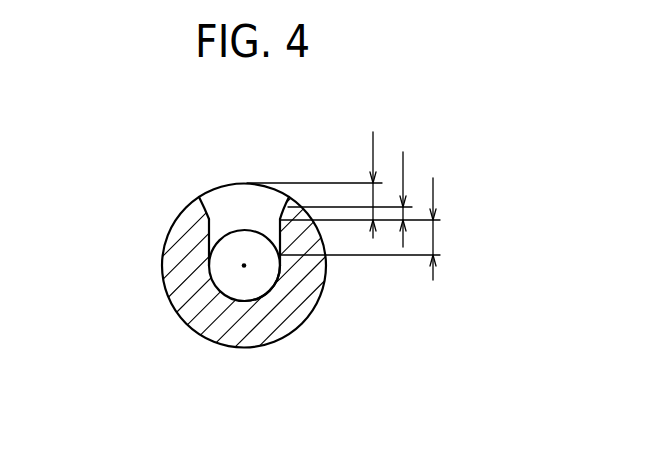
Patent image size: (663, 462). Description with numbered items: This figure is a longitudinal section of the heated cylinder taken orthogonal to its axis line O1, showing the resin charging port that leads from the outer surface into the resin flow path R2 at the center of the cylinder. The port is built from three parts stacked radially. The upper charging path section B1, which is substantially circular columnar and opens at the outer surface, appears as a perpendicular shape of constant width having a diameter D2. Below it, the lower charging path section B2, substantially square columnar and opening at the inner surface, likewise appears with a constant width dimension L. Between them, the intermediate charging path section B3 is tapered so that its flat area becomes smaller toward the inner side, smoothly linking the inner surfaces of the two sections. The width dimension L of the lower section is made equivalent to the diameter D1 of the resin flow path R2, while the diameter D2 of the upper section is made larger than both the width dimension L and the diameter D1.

The upper charging path section B1 is at (374, 140).
The lower charging path section B2 is at (434, 198).
The intermediate charging path section B3 is at (404, 170).
The diameter of resin flow path D1 is at (360, 265).
The diameter of upper charging path section D2 is at (342, 197).
The width dimension of lower charging path section L is at (360, 238).
The axis line O1 is at (243, 268).
The resin flow path R2 is at (278, 313).